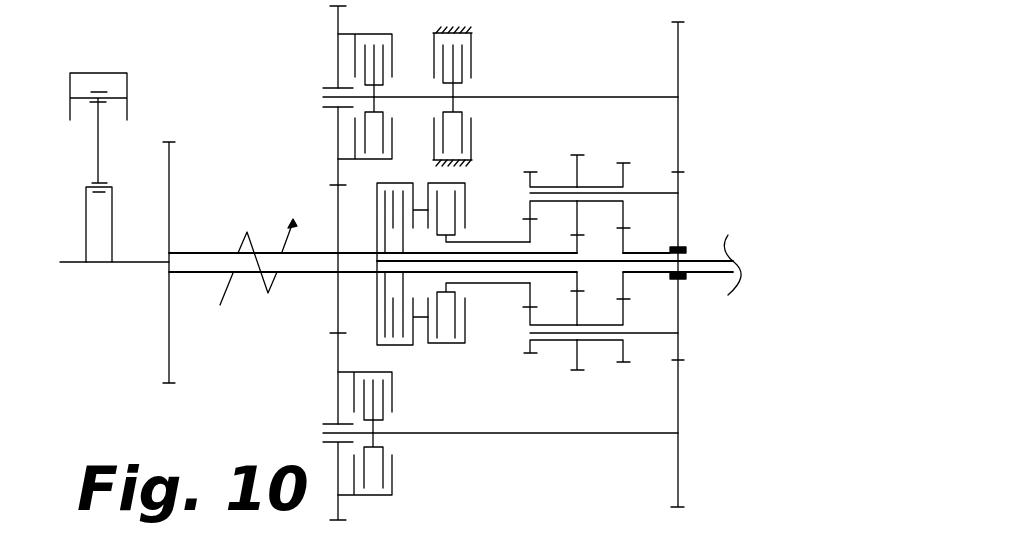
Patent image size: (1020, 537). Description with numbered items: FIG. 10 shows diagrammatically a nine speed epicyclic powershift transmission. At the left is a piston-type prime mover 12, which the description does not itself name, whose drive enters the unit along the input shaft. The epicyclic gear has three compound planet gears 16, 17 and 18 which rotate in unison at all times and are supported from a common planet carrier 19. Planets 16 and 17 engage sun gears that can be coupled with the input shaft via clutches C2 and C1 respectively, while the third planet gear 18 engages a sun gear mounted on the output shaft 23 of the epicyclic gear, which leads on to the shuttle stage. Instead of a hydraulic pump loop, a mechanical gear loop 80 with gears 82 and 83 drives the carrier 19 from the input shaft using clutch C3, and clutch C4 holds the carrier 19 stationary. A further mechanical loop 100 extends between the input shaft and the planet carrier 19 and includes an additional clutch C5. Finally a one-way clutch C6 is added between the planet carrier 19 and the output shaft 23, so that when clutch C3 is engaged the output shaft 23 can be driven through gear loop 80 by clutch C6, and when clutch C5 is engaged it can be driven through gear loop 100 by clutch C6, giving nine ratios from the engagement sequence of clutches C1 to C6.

The engine 12 is at (98, 156).
The gear 82 is at (337, 47).
The gear 83 is at (335, 207).
The mechanical gear loop 80 is at (542, 97).
The further mechanical loop 100 is at (488, 433).
The compound planet gear 16 is at (528, 181).
The compound planet gear 17 is at (578, 177).
The compound planet gear 18 is at (623, 180).
The planet carrier 19 is at (653, 192).
The output shaft 23 is at (715, 275).
The clutch C1 is at (402, 278).
The clutch C2 is at (479, 278).
The clutch C3 is at (365, 84).
The clutch C4 is at (452, 83).
The clutch C5 is at (365, 450).
The one-way clutch C6 is at (693, 254).